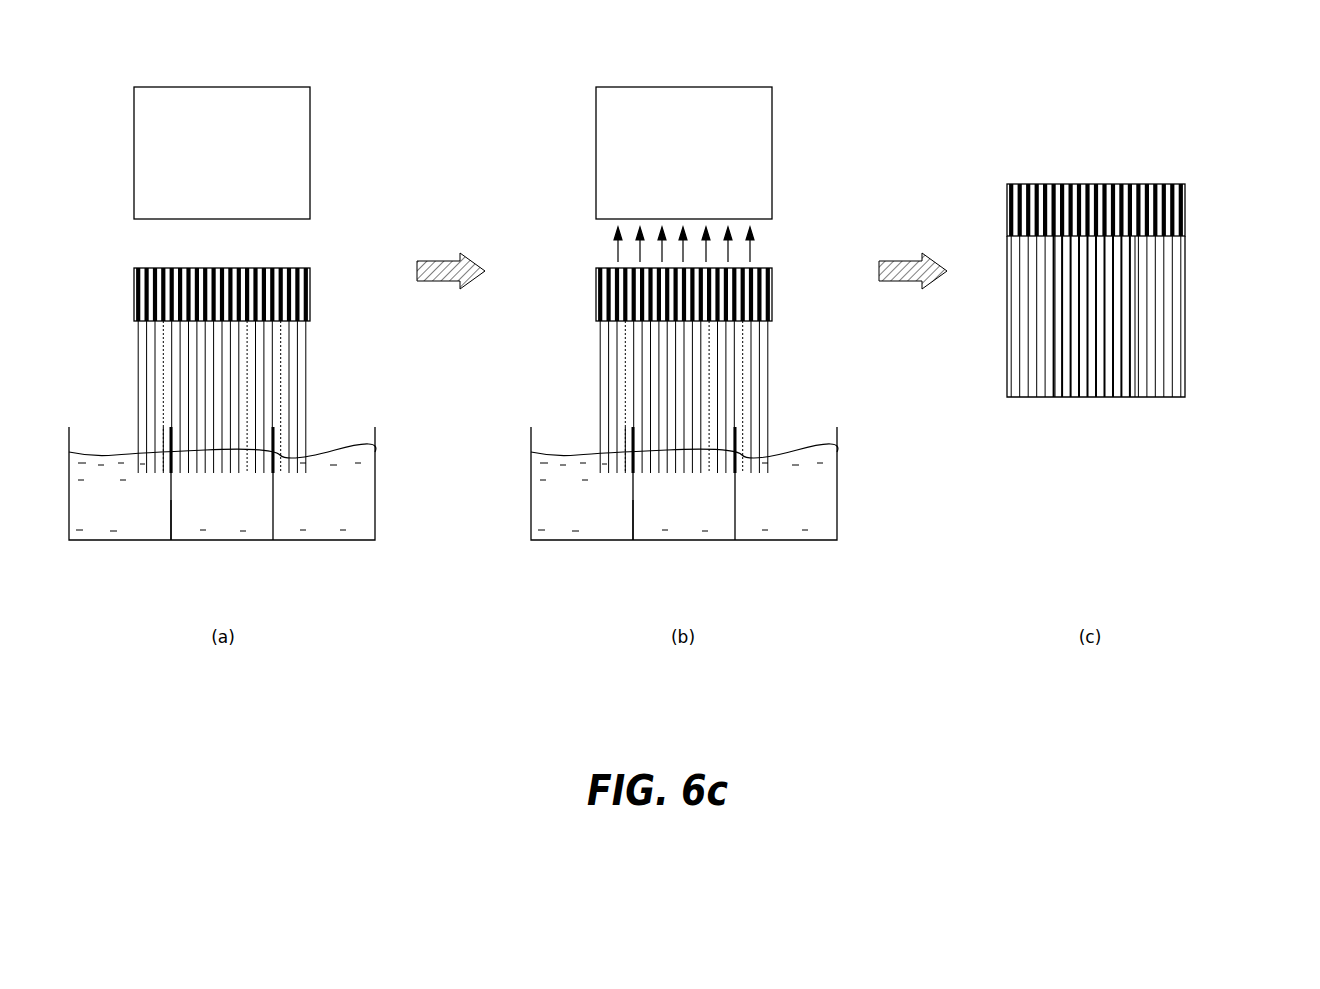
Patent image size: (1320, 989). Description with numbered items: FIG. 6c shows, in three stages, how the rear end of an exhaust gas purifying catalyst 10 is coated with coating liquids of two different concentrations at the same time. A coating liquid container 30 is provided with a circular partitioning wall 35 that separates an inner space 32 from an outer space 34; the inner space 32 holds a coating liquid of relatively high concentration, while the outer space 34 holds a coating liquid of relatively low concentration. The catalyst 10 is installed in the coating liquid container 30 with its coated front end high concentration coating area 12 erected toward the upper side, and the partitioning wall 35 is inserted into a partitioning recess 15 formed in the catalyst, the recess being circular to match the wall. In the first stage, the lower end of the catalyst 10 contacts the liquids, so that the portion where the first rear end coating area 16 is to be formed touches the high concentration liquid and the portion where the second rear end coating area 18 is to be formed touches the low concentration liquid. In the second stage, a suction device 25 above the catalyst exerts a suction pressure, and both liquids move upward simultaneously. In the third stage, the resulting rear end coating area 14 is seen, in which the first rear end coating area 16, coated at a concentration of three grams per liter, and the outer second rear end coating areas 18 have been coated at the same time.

The catalyst 10 is at (659, 287).
The coated front end high concentration coating area 12 is at (148, 294).
The rear end coating area 14 is at (615, 354).
The partitioning recess 15 is at (165, 429).
The first rear end coating area 16 is at (1055, 400).
The second rear end coating area 18 is at (1162, 437).
The suction device 25 is at (152, 147).
The coating liquid container 30 is at (509, 521).
The inner space 32 is at (253, 528).
The outer space 34 is at (361, 528).
The partitioning wall 35 is at (168, 521).